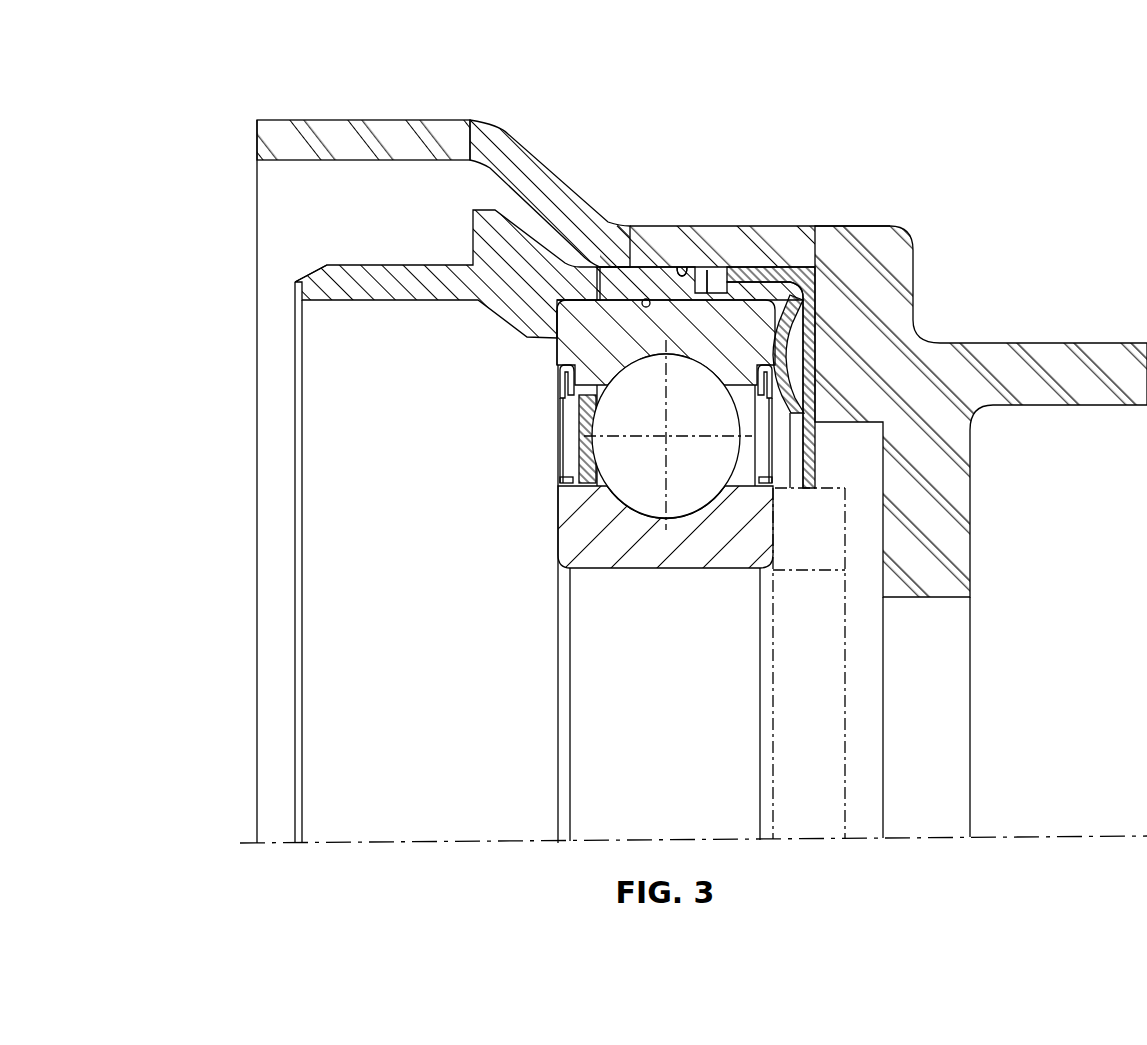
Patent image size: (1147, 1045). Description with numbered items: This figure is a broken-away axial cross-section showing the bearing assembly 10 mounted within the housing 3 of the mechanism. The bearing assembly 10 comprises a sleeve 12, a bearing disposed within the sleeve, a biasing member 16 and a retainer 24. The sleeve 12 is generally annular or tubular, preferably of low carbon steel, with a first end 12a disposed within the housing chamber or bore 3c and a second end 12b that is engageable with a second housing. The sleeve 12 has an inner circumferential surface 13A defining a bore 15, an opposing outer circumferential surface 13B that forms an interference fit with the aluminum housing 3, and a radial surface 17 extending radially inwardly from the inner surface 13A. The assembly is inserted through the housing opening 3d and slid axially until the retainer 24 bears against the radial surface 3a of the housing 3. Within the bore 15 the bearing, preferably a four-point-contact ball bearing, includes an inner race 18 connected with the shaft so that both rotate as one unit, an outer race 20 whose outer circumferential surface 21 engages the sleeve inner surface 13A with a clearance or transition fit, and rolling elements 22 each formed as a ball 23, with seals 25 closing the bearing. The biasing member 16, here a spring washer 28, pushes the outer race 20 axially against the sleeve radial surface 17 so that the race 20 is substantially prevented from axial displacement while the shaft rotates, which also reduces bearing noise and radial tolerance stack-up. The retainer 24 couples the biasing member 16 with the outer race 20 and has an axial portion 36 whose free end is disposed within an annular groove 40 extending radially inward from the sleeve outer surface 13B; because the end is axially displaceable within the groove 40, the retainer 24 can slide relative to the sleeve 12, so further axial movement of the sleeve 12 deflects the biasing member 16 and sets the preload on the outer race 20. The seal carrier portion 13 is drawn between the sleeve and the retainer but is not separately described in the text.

The housing 3 is at (901, 203).
The radial surface of the housing 3a is at (803, 331).
The housing chamber or bore 3c is at (476, 185).
The housing opening 3d is at (257, 199).
The bearing assembly 10 is at (222, 393).
The sleeve 12 is at (399, 222).
The first end of the sleeve 12a is at (766, 233).
The second end of the sleeve 12b is at (300, 285).
The seal carrier ring 13 is at (680, 283).
The inner circumferential surface of the sleeve 13A is at (648, 299).
The outer circumferential surface of the sleeve 13B is at (616, 267).
The bore 15 is at (362, 657).
The biasing member 16 is at (788, 272).
The radial surface of the sleeve 17 is at (575, 326).
The inner race 18 is at (558, 531).
The outer race 20 is at (566, 344).
The outer circumferential surface of the outer race 21 is at (598, 300).
The rolling elements 22 is at (598, 434).
The ball 23 is at (655, 510).
The retainer 24 is at (824, 293).
The seals 25 is at (557, 407).
The spring washer 28 is at (803, 366).
The retainer axial portion 36 is at (684, 272).
The annular groove 40 is at (707, 280).